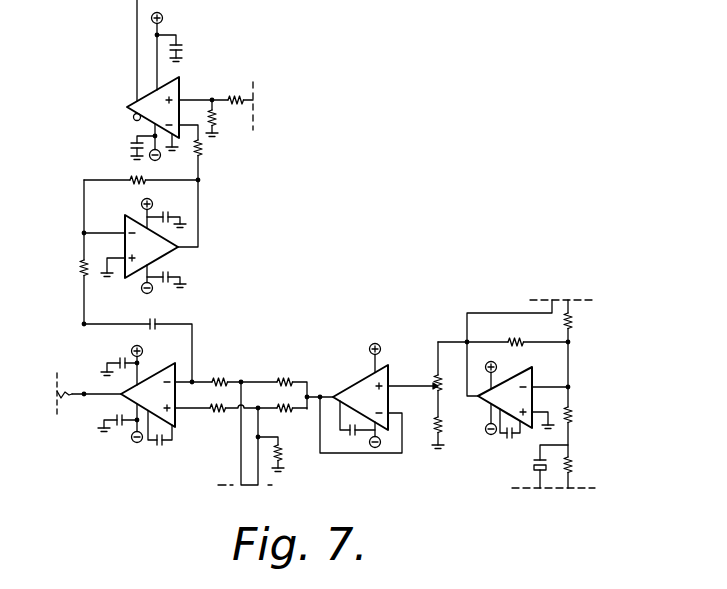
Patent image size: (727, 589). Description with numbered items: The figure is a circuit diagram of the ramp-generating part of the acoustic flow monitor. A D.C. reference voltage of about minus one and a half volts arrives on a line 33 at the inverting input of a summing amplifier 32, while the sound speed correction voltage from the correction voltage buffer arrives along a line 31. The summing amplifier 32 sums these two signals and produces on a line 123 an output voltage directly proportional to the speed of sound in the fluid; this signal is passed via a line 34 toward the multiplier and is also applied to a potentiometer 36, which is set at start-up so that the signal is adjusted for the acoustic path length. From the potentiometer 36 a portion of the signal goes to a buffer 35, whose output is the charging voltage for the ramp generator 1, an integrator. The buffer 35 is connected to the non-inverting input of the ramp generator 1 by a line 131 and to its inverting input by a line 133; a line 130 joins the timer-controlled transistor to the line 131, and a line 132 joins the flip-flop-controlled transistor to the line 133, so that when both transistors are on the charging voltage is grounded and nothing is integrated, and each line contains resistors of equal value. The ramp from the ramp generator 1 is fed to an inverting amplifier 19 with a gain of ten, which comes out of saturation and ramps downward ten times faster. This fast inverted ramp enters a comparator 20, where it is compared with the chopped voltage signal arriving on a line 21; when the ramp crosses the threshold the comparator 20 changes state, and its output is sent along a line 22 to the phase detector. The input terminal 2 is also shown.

The ramp generator 1 is at (151, 381).
The input terminal 2 is at (74, 397).
The inverting amplifier 19 is at (180, 257).
The comparator 20 is at (183, 86).
The line 21 is at (247, 105).
The line 22 is at (137, 44).
The line 31 is at (570, 368).
The summing amplifier 32 is at (485, 408).
The line 33 is at (572, 444).
The line 34 is at (491, 313).
The buffer 35 is at (350, 387).
The potentiometer 36 is at (433, 376).
The line 123 is at (466, 362).
The line 130 is at (262, 479).
The line 131 is at (194, 410).
The line 132 is at (240, 470).
The line 133 is at (221, 380).